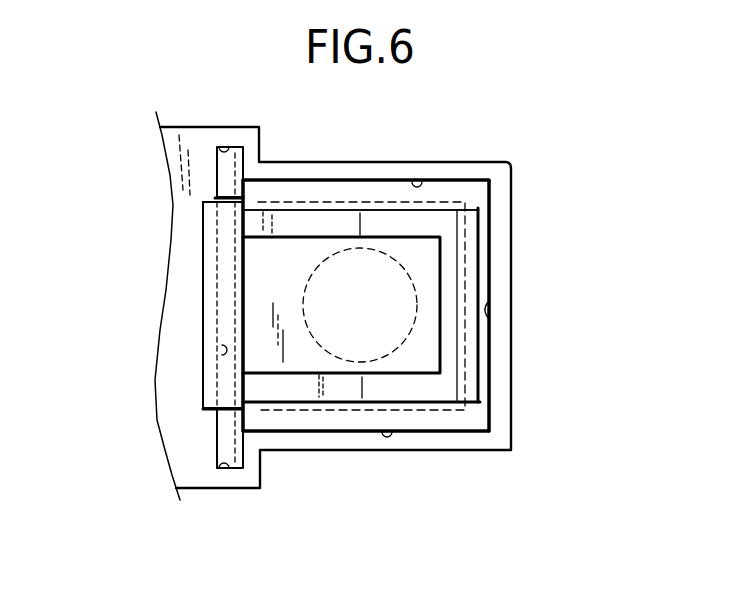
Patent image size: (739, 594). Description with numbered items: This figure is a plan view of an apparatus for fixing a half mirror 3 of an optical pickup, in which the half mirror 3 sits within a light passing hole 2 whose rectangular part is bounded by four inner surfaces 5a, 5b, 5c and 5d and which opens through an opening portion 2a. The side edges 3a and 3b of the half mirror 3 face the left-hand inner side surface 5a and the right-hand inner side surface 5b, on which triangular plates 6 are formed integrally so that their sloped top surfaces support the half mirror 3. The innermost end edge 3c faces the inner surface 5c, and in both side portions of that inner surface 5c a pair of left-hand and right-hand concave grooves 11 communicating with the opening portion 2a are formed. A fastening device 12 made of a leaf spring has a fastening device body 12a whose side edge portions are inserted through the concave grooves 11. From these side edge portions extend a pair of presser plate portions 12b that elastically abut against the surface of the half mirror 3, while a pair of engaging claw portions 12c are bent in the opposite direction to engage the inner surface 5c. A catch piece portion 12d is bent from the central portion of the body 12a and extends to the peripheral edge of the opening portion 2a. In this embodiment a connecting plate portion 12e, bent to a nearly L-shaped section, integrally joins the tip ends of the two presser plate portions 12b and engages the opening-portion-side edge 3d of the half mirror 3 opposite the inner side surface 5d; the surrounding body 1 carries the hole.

The housing 1 is at (512, 213).
The light passing hole 2 is at (440, 291).
The opening portion 2a is at (180, 137).
The half mirror 3 is at (489, 381).
The side edge 3a is at (447, 180).
The side edge 3b is at (437, 433).
The innermost end edge 3c is at (225, 318).
The opening-portion-side edge 3d is at (490, 400).
The left-hand inner side surface 5a is at (410, 182).
The right-hand inner side surface 5b is at (393, 434).
The inner surface 5c is at (222, 355).
The inner side surface 5d is at (490, 320).
The triangular plate 6 is at (367, 200).
The concave groove 11 is at (223, 150).
The fastening device 12 is at (200, 247).
The fastening device body 12a is at (245, 308).
The presser plate portion 12b is at (311, 218).
The engaging claw portion 12c is at (222, 166).
The catch piece portion 12d is at (212, 283).
The connecting plate portion 12e is at (472, 343).